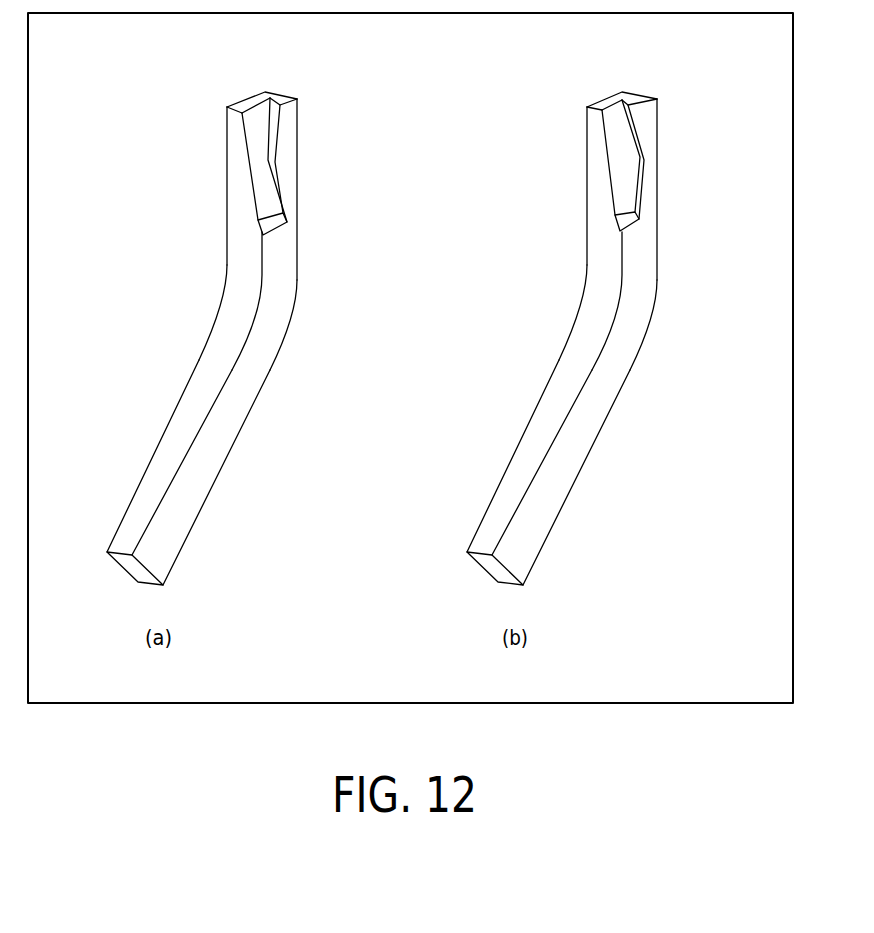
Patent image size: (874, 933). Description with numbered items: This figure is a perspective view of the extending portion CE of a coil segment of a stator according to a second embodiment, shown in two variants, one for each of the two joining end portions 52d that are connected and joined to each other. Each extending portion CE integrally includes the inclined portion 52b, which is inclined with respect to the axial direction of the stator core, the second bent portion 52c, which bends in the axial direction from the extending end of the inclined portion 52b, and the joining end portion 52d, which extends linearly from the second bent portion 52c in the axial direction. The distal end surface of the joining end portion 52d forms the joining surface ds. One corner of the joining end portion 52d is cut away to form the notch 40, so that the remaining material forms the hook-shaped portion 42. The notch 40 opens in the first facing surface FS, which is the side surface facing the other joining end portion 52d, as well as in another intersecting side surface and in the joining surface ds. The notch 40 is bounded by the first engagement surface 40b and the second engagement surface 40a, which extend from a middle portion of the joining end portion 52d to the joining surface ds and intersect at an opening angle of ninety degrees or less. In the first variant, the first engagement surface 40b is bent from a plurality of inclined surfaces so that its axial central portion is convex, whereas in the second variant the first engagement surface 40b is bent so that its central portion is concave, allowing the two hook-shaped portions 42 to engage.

The notch 40 is at (239, 157).
The second engagement surface 40a is at (255, 128).
The first engagement surface 40b is at (296, 119).
The hook-shaped portion 42 is at (288, 162).
The inclined portion 52b is at (227, 442).
The second bent portion 52c is at (284, 305).
The joining end portion 52d is at (238, 202).
The first facing surface FS is at (289, 253).
The extending portion CE is at (136, 470).
The joining surface ds is at (248, 103).